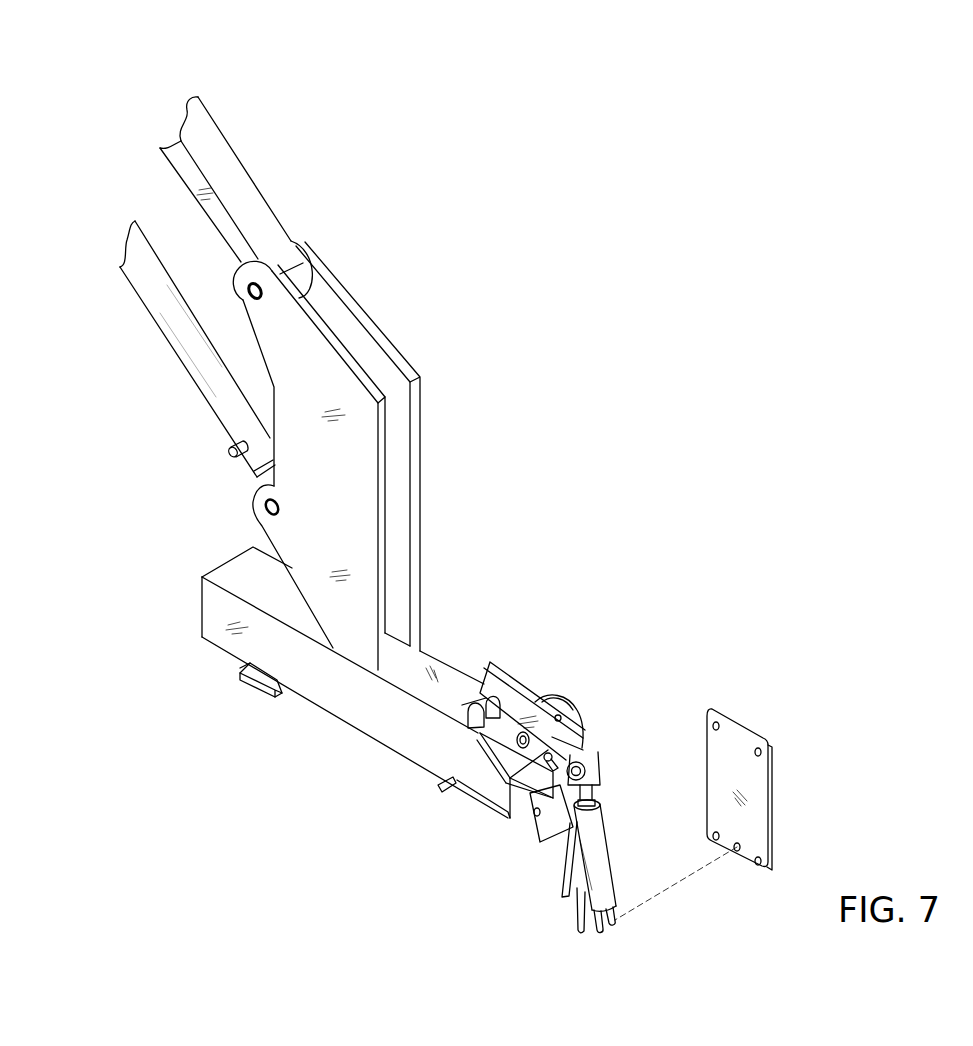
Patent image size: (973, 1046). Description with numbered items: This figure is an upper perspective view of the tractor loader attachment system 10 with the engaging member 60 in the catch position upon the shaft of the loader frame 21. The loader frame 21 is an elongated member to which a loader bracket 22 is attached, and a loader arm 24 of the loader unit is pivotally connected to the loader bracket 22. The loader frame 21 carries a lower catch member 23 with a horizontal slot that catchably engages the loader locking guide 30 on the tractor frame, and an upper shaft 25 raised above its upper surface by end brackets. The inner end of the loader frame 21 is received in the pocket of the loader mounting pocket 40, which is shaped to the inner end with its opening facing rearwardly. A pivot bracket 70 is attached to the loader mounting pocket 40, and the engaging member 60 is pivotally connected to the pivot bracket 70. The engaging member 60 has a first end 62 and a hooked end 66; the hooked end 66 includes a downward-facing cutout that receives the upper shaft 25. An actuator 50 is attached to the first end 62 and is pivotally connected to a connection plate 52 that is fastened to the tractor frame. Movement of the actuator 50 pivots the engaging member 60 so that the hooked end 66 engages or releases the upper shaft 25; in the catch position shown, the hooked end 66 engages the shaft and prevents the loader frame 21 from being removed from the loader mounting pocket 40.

The tractor loader attachment system 10 is at (690, 697).
The loader frame 21 is at (363, 698).
The loader bracket 22 is at (346, 477).
The lower catch member 23 is at (260, 693).
The loader arm 24 is at (252, 180).
The upper shaft 25 is at (480, 703).
The loader locking guide 30 is at (226, 666).
The loader mounting pocket 40 is at (470, 820).
The actuator 50 is at (615, 872).
The connection plate 52 is at (773, 785).
The engaging member 60 is at (538, 663).
The first end 62 is at (583, 760).
The hooked end 66 is at (486, 697).
The pivot bracket 70 is at (578, 726).